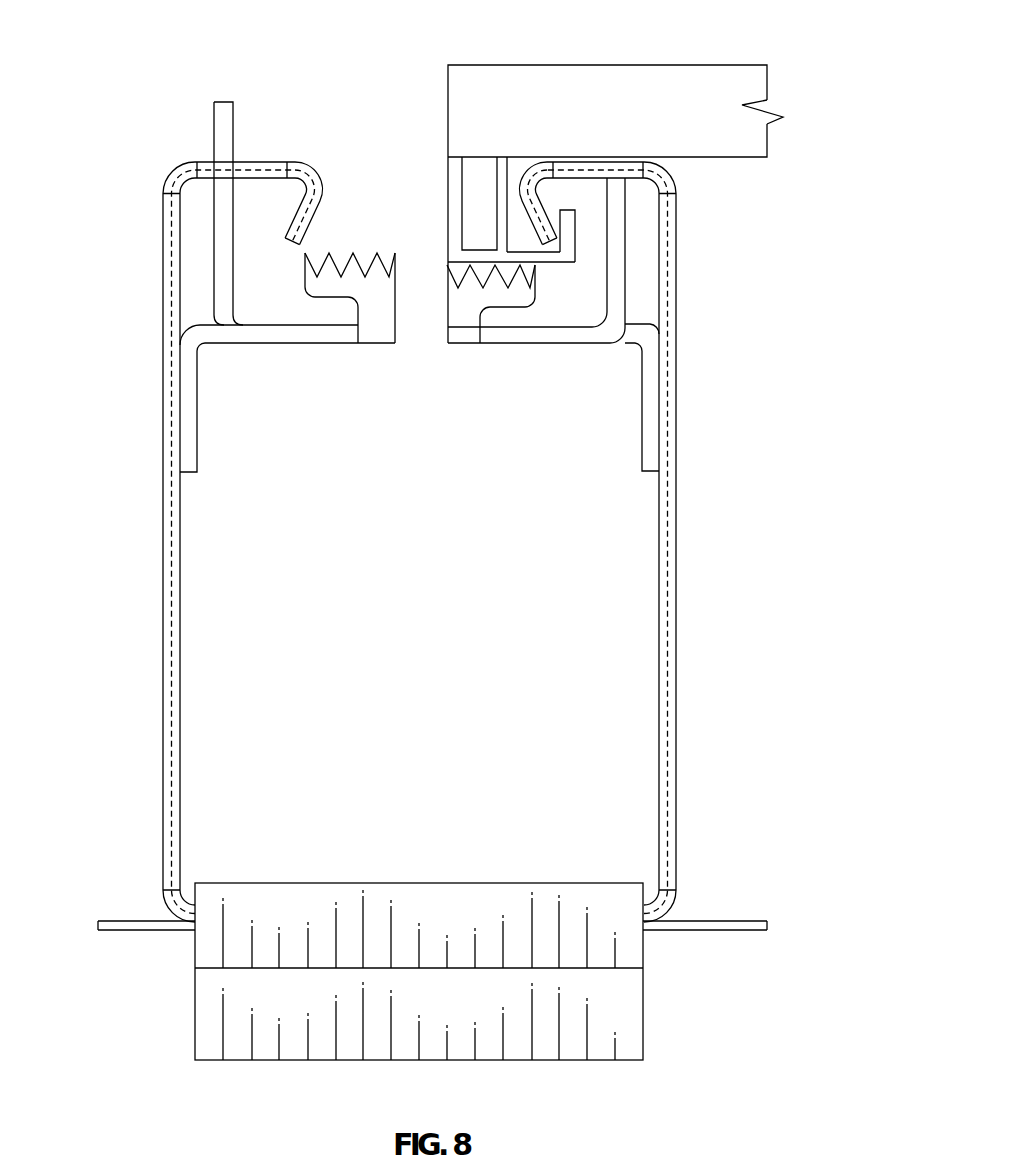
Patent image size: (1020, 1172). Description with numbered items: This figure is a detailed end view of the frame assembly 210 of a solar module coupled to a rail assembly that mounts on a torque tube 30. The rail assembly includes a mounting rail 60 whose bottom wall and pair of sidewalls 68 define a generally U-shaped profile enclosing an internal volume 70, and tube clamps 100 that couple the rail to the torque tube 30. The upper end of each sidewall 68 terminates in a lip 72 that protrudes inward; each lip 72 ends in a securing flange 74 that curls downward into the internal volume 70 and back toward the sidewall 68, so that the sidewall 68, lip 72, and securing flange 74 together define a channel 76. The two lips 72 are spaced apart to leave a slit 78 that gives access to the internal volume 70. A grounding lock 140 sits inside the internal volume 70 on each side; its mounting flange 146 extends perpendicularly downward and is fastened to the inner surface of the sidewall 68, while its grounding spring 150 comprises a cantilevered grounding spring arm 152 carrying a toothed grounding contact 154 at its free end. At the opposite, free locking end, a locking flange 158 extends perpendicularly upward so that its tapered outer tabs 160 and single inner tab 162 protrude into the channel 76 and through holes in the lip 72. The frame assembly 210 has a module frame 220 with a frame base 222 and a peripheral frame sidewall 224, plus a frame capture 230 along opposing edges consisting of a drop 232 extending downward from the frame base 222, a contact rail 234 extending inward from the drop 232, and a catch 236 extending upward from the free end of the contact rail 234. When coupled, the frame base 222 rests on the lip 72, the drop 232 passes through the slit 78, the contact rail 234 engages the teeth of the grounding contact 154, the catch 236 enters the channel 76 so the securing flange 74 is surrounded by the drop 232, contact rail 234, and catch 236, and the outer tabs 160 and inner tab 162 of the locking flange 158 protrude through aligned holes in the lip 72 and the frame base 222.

The torque tube 30 is at (743, 927).
The mounting rail 60 is at (417, 486).
The sidewalls 68 is at (162, 618).
The internal volume 70 is at (261, 705).
The lip 72 is at (252, 162).
The securing flange 74 is at (300, 225).
The channel 76 is at (570, 191).
The slit 78 is at (341, 156).
The tube clamp 100 is at (611, 1015).
The grounding lock 140 is at (212, 334).
The mounting flange 146 is at (187, 400).
The grounding spring 150 is at (291, 280).
The grounding spring arm 152 is at (377, 343).
The grounding contact 154 is at (328, 253).
The locking flange 158 is at (394, 192).
The outer tabs 160 is at (144, 187).
The inner tab 162 is at (186, 78).
The frame assembly 210 is at (624, 104).
The module frame 220 is at (468, 96).
The frame base 222 is at (738, 158).
The frame sidewall 224 is at (753, 143).
The frame capture 230 is at (550, 258).
The drop 232 is at (448, 180).
The contact rail 234 is at (543, 267).
The catch 236 is at (573, 217).